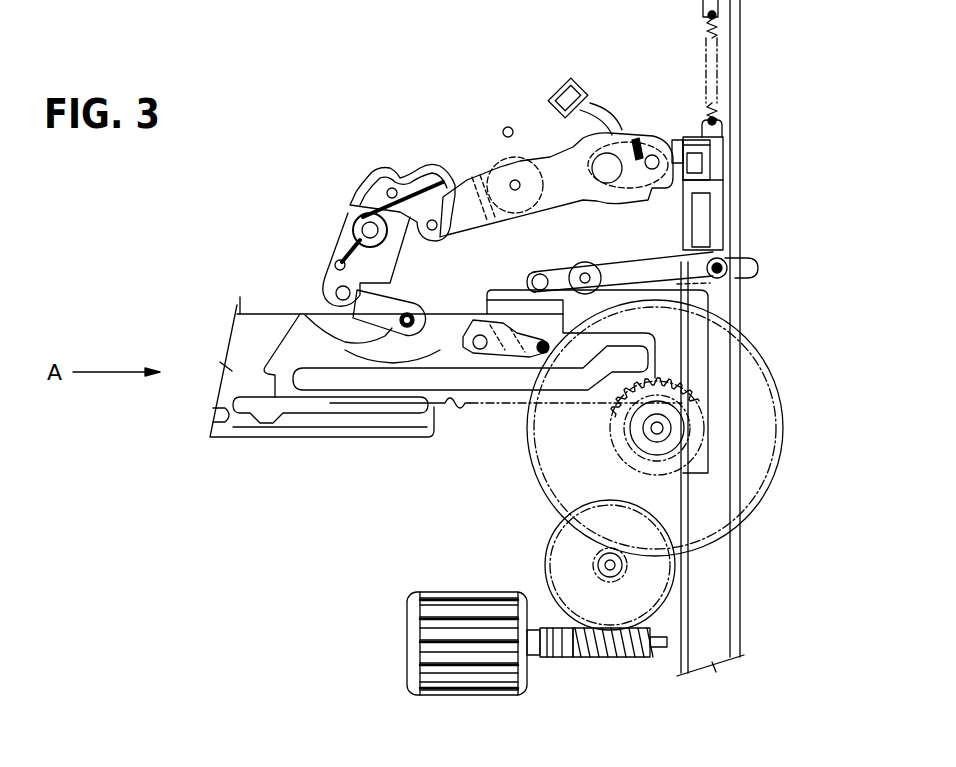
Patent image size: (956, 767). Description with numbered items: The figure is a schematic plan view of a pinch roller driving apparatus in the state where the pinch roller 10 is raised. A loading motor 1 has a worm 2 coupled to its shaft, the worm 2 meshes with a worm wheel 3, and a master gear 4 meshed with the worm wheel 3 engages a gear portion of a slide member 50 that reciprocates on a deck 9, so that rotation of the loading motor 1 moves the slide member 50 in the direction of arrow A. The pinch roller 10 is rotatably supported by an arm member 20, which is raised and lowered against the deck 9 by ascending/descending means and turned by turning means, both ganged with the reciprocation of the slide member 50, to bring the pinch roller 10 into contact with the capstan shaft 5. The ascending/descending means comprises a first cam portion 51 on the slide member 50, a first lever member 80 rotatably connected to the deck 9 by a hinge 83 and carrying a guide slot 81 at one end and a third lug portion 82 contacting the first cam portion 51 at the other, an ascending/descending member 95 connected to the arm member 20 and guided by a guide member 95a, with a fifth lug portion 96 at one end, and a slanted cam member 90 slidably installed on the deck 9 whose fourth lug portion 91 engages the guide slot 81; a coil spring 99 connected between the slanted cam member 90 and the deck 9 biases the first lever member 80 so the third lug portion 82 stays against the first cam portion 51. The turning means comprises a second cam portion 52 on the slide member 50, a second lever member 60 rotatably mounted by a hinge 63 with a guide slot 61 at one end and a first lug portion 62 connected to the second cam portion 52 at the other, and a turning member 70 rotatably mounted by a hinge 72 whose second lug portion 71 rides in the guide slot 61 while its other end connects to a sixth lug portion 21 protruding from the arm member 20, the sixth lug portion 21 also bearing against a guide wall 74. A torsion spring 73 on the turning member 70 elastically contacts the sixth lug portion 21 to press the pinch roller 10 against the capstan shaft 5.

The loading motor 1 is at (475, 694).
The worm 2 is at (614, 660).
The worm wheel 3 is at (544, 557).
The master gear 4 is at (758, 507).
The capstan shaft 5 is at (505, 125).
The deck 9 is at (742, 628).
The pinch roller 10 is at (493, 163).
The arm member 20 is at (563, 126).
The sixth lug portion 21 is at (447, 160).
The slide member 50 is at (241, 438).
The first cam portion 51 is at (517, 292).
The second cam portion 52 is at (708, 373).
The second lever member 60 is at (390, 348).
The guide slot 61 is at (415, 312).
The first lug portion 62 is at (541, 352).
The hinge 63 is at (460, 353).
The turning member 70 is at (356, 197).
The second lug portion 71 is at (310, 314).
The hinge 72 is at (333, 292).
The torsion spring 73 is at (358, 200).
The guide wall 74 is at (387, 166).
The first lever member 80 is at (618, 250).
The guide slot 81 is at (752, 282).
The third lug portion 82 is at (540, 272).
The hinge 83 is at (580, 260).
The slanted cam member 90 is at (728, 164).
The fourth lug portion 91 is at (737, 242).
The ascending/descending member 95 is at (650, 133).
The guide member 95a is at (577, 77).
The fifth lug portion 96 is at (720, 145).
The coil spring 99 is at (717, 24).